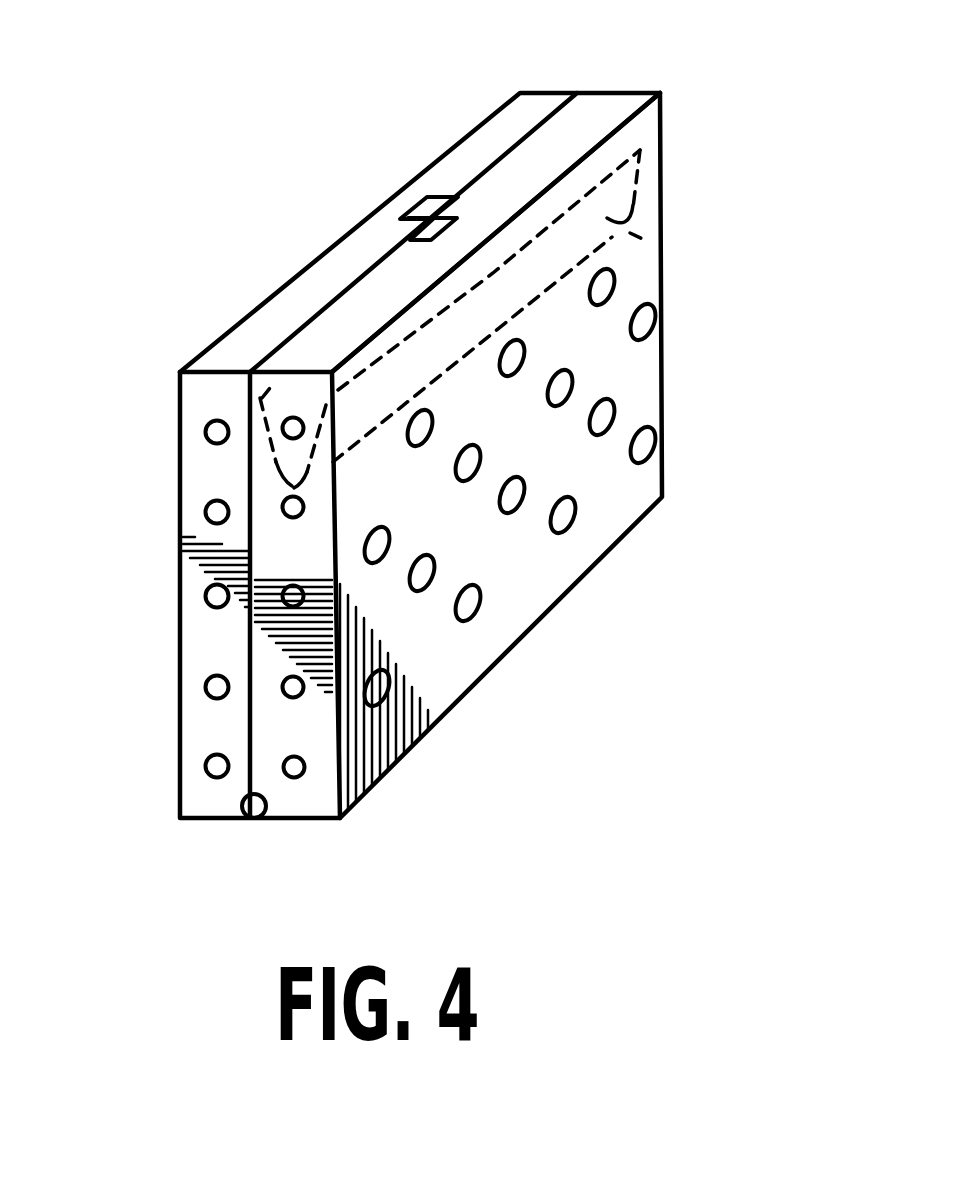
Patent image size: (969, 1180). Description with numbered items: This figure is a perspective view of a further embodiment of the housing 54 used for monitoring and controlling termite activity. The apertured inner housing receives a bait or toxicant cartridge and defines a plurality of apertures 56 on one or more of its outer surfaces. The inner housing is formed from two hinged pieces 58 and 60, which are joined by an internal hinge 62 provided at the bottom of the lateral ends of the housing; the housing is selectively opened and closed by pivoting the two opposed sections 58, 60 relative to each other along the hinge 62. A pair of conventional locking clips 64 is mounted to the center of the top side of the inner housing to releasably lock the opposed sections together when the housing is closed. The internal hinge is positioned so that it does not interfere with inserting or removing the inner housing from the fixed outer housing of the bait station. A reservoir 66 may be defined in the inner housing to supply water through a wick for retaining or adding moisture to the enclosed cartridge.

The filter cartridge assembly 54 is at (758, 398).
The apertures 56 is at (643, 462).
The hinged piece 58 is at (197, 643).
The hinged piece 60 is at (323, 642).
The internal hinge 62 is at (255, 823).
The locking clips 64 is at (438, 195).
The reservoir 66 is at (660, 240).